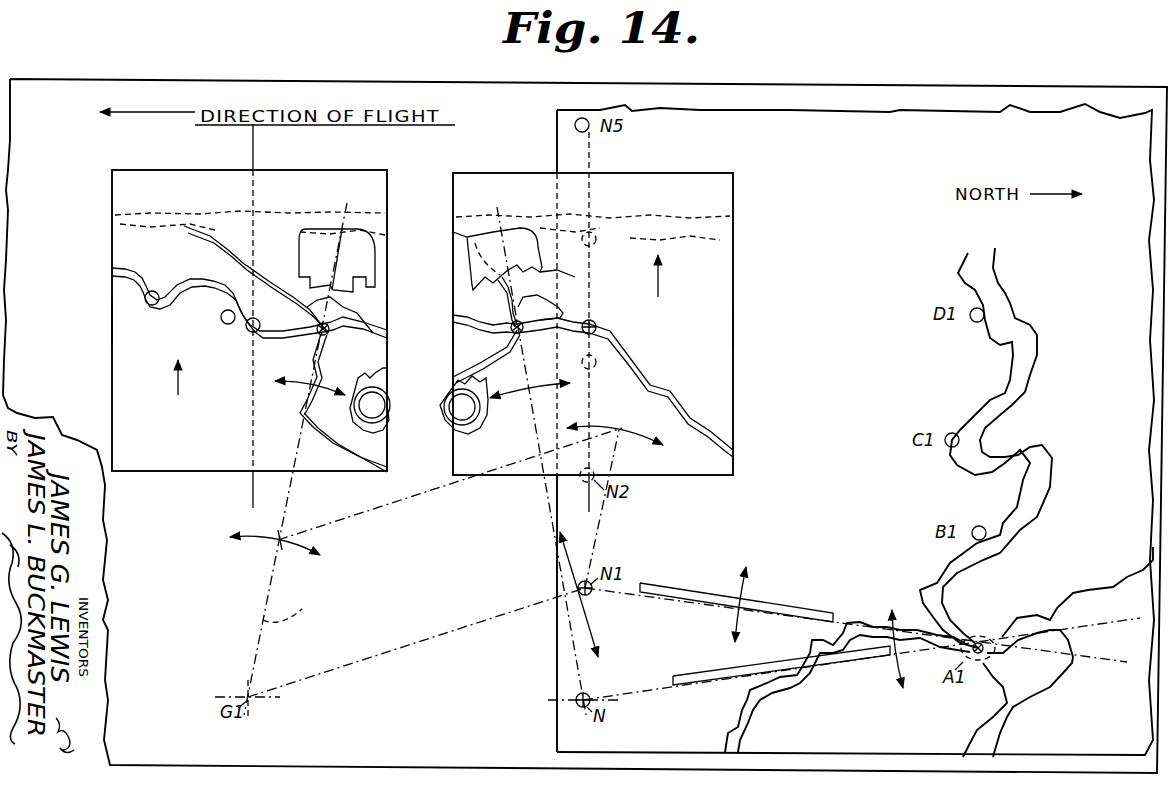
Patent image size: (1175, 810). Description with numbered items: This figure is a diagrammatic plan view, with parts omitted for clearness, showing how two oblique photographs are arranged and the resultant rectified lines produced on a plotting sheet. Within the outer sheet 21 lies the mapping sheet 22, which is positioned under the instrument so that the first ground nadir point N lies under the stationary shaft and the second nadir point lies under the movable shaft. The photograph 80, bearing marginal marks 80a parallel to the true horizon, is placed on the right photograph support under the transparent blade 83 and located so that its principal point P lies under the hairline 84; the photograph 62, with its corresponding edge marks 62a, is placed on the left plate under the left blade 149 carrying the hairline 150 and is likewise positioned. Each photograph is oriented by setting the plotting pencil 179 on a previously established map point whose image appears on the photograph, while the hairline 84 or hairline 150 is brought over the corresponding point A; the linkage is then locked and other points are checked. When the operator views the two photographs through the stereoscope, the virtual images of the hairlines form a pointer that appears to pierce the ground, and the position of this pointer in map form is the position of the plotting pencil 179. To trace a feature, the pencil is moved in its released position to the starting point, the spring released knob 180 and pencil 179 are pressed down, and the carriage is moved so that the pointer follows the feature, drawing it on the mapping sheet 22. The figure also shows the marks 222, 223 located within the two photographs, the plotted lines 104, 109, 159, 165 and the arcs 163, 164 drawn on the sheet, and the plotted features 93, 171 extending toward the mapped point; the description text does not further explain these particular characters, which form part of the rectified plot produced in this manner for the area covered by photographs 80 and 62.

The map sheet 21 is at (212, 80).
The mapping sheet 22 is at (1130, 116).
The photograph 62 is at (251, 308).
The edge of first photograph 62a is at (115, 325).
The photograph 80 is at (586, 310).
The marginal marks 80a is at (453, 330).
The transparent blade 83 is at (575, 277).
The hairline 84 is at (500, 242).
The left blade 149 is at (312, 252).
The hairline 150 is at (333, 240).
The target mark 222 is at (475, 426).
The target mark 223 is at (360, 421).
The angle 109 is at (295, 459).
The line of position 104 is at (459, 624).
The line of sight 165 is at (398, 503).
The angle indicator 163 is at (277, 542).
The line of position 159 is at (600, 512).
The angle indicator 164 is at (618, 433).
The runway 171 is at (784, 607).
The runway 93 is at (724, 672).
The plotting pencil 179 is at (918, 661).
The spring released knob 180 is at (982, 636).